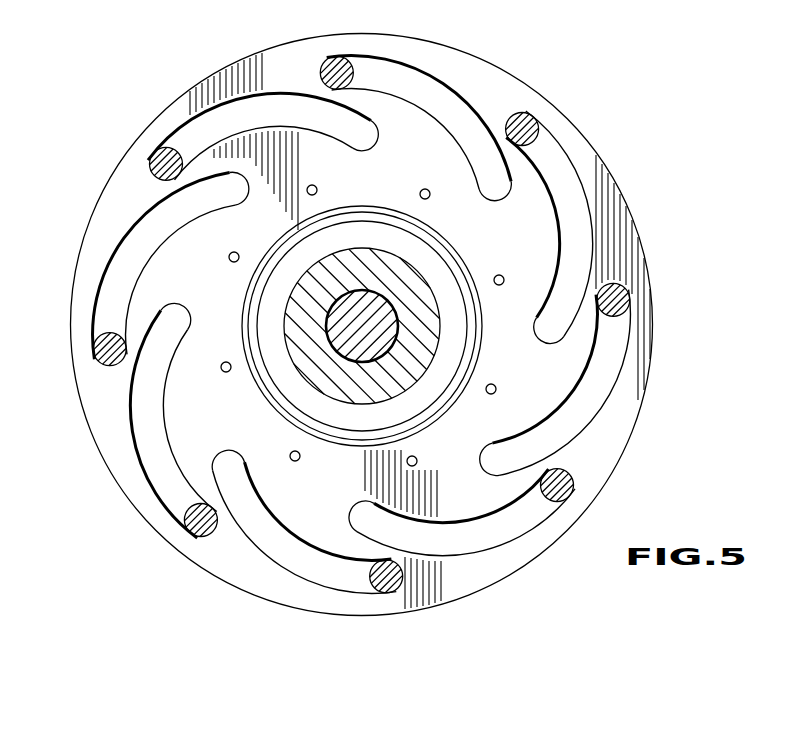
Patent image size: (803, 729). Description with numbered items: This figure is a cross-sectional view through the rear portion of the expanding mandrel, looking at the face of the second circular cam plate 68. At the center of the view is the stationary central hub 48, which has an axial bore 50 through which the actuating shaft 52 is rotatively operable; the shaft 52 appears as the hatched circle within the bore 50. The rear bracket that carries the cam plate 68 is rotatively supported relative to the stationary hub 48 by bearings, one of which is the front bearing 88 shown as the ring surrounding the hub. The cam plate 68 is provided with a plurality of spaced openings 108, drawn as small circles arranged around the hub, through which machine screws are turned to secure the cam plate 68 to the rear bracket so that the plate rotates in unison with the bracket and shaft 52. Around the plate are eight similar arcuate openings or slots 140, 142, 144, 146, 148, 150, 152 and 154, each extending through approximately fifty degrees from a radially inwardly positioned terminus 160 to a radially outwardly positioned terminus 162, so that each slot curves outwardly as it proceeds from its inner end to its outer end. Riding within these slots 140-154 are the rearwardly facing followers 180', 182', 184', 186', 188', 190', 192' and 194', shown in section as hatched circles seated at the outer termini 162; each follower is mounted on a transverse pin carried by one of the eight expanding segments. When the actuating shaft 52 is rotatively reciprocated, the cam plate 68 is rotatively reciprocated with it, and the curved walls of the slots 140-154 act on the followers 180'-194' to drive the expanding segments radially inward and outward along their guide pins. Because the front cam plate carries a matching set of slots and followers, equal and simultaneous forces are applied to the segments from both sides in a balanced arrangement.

The second circular cam plate 68 is at (573, 533).
The axial bore 50 is at (393, 308).
The front bearing 88 is at (428, 392).
The central hub 48 is at (303, 308).
The actuating shaft 52 is at (386, 323).
The spaced openings 108 is at (420, 193).
The arcuate slot 140 is at (428, 92).
The arcuate slot 142 is at (572, 212).
The arcuate slot 144 is at (595, 385).
The arcuate slot 146 is at (488, 538).
The arcuate slot 148 is at (273, 544).
The arcuate slot 150 is at (150, 444).
The arcuate slot 152 is at (132, 250).
The arcuate slot 154 is at (228, 118).
The radially inwardly positioned termini 160 is at (380, 141).
The radially outwardly positioned termini 162 is at (321, 74).
The rearward follower 180' is at (129, 152).
The rearward follower 182' is at (337, 45).
The rearward follower 184' is at (548, 107).
The rearward follower 186' is at (652, 287).
The rearward follower 188' is at (592, 490).
The rearward follower 190' is at (397, 604).
The rearward follower 192' is at (161, 527).
The rearward follower 194' is at (78, 349).